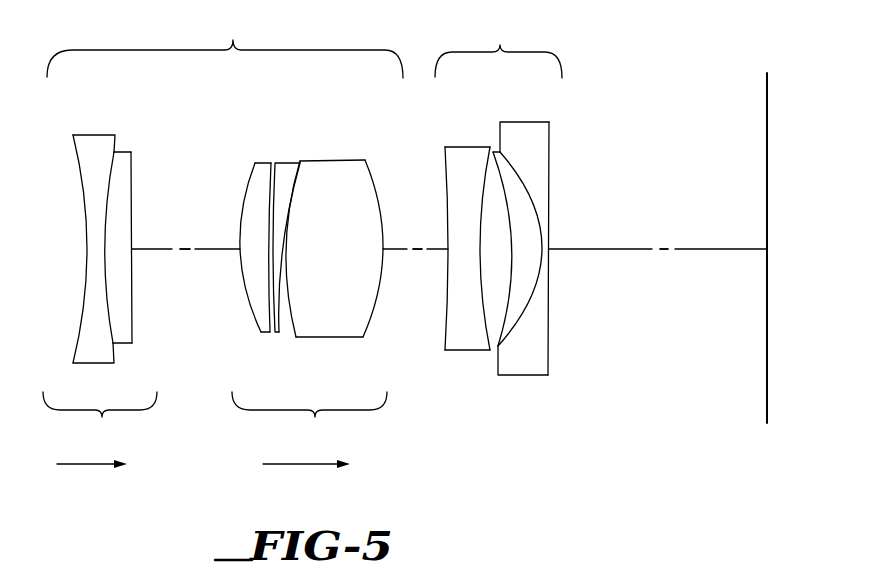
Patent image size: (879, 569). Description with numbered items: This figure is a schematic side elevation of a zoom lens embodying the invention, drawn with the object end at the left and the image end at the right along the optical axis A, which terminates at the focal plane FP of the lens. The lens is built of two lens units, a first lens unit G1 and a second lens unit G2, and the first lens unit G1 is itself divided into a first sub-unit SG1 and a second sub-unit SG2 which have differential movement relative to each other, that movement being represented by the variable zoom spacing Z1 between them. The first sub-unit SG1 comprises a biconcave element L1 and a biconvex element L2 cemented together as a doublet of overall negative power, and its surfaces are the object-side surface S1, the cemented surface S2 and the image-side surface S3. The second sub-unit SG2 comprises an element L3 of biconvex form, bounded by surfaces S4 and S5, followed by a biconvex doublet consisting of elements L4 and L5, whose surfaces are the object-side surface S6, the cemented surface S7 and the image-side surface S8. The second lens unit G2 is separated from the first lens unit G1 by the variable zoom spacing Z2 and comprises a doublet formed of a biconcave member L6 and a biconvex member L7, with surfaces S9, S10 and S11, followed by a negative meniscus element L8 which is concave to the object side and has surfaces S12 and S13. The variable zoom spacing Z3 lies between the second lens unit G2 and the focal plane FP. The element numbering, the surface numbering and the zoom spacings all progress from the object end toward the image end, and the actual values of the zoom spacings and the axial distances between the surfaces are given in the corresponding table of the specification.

The lens unit G1 is at (229, 243).
The lens unit G2 is at (520, 215).
The first sub-unit SG1 is at (106, 278).
The second sub-unit SG2 is at (315, 289).
The biconcave element L1 is at (103, 226).
The biconvex element L2 is at (145, 222).
The element of biconvex form L3 is at (240, 241).
The doublet element L4 is at (296, 253).
The doublet element L5 is at (355, 244).
The biconcave member L6 is at (480, 254).
The biconvex member L7 is at (548, 212).
The negative meniscus element L8 is at (552, 231).
The lens surface S1 is at (86, 302).
The lens surface S2 is at (110, 313).
The lens surface S3 is at (133, 308).
The lens surface S4 is at (245, 298).
The lens surface S5 is at (265, 327).
The lens surface S6 is at (284, 337).
The lens surface S7 is at (292, 313).
The lens surface S8 is at (373, 313).
The lens surface S9 is at (443, 332).
The lens surface S10 is at (482, 328).
The lens surface S11 is at (508, 298).
The lens surface S12 is at (532, 262).
The lens surface S13 is at (552, 212).
The variable zoom spacing Z1 is at (187, 237).
The variable zoom spacing Z2 is at (421, 237).
The variable zoom spacing Z3 is at (657, 236).
The optical axis A is at (722, 246).
The focal plane FP is at (767, 232).